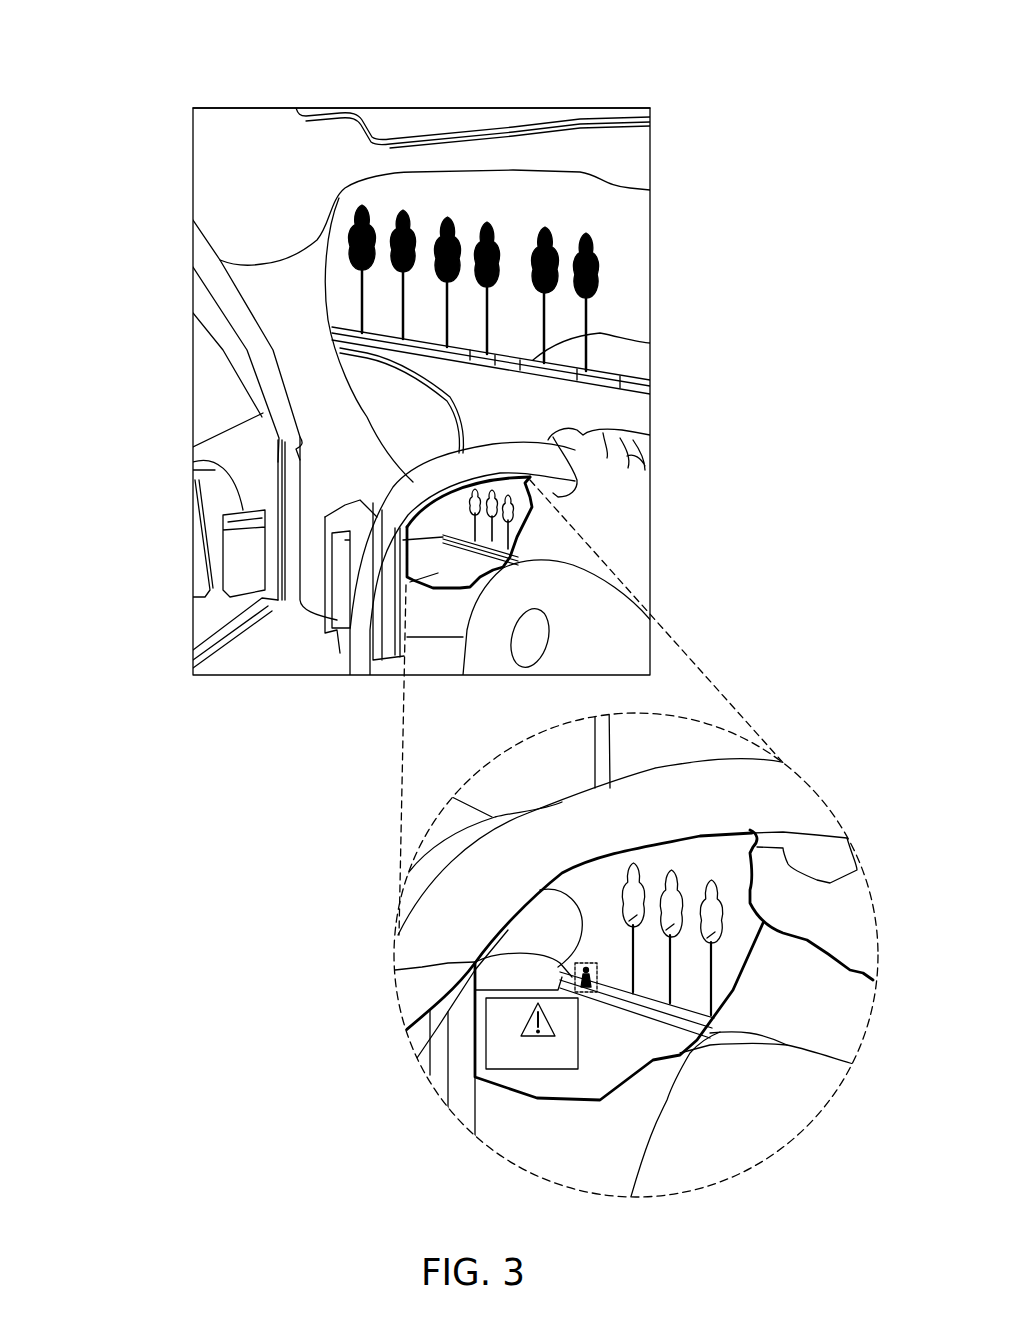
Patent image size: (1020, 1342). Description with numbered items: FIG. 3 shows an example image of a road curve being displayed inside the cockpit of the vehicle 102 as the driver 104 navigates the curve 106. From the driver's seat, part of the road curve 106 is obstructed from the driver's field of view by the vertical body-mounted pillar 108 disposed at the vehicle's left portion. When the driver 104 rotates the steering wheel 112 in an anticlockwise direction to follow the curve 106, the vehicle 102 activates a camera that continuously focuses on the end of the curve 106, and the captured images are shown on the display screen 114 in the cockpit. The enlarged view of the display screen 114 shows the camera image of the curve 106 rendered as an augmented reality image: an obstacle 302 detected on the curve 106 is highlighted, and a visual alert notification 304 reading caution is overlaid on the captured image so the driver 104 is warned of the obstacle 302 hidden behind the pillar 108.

The vehicle 102 is at (262, 140).
The driver 104 is at (618, 505).
The road curve 106 is at (490, 383).
The vertical body-mounted pillar 108 is at (286, 339).
The steering wheel 112 is at (407, 582).
The display screen 114 is at (351, 668).
The obstacle 302 is at (495, 950).
The visual alert notification 304 is at (487, 1027).